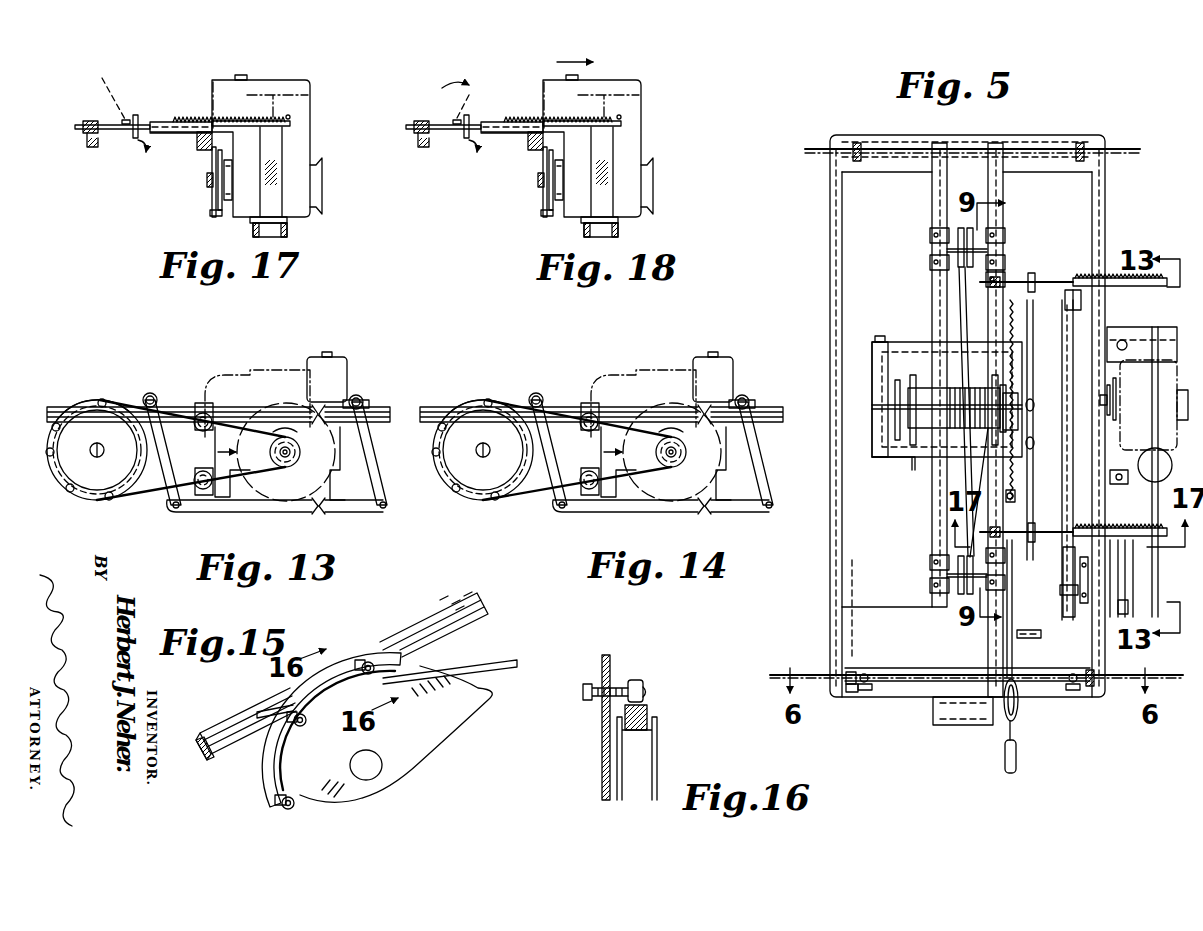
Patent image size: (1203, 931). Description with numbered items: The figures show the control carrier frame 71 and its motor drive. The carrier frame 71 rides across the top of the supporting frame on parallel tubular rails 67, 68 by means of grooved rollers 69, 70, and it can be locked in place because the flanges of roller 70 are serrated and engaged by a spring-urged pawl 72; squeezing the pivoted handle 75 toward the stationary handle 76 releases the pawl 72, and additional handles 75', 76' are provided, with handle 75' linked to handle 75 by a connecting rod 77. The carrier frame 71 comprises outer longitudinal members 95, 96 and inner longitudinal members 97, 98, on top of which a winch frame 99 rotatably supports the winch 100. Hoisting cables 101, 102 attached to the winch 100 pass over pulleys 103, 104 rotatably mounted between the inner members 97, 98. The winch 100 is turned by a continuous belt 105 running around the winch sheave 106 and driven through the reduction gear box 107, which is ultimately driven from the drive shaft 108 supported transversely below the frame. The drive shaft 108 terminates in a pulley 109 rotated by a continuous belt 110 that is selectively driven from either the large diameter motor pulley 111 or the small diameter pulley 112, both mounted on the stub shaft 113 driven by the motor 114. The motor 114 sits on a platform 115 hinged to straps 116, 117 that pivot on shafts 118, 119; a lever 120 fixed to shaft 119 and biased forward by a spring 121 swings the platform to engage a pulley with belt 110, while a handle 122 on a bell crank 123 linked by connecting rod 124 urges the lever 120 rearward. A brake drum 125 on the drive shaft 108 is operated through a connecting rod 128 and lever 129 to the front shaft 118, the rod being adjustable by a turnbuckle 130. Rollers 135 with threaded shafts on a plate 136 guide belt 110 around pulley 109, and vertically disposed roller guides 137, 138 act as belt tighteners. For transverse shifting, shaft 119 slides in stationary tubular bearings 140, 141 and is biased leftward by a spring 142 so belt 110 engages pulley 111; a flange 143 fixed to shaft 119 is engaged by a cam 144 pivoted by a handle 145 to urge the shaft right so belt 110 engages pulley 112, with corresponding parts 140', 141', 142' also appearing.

In FIG. 5, the tubular rail 67 is at (782, 672).
In FIG. 5, the tubular rail 68 is at (1115, 149).
In FIG. 5, the grooved roller 69 is at (857, 143).
In FIG. 5, the grooved roller 70 is at (855, 690).
In FIG. 5, the control carrier frame 71 is at (1110, 188).
In FIG. 5, the pawl 72 is at (854, 672).
In FIG. 5, the pivoted handle 75 is at (883, 653).
In FIG. 5, the additional handle 75' is at (1056, 699).
In FIG. 5, the stationary handle 76 is at (887, 704).
In FIG. 5, the additional handle 76' is at (1080, 704).
In FIG. 5, the connecting rod 77 is at (962, 672).
In FIG. 5, the outer longitudinal member 95 is at (835, 228).
In FIG. 17, the outer longitudinal member 96 is at (190, 121).
In FIG. 18, the outer longitudinal member 96 is at (545, 123).
In FIG. 13, the outer longitudinal member 96 is at (50, 407).
In FIG. 14, the outer longitudinal member 96 is at (433, 407).
In FIG. 15, the outer longitudinal member 96 is at (428, 612).
In FIG. 5, the outer longitudinal member 96 is at (1102, 218).
In FIG. 5, the inner longitudinal member 97 is at (932, 213).
In FIG. 17, the inner longitudinal member 98 is at (87, 145).
In FIG. 18, the inner longitudinal member 98 is at (416, 148).
In FIG. 5, the inner longitudinal member 98 is at (1003, 226).
In FIG. 5, the winch frame 99 is at (903, 342).
In FIG. 5, the winch 100 is at (920, 390).
In FIG. 5, the hoisting cable 101 is at (958, 290).
In FIG. 5, the hoisting cable 102 is at (972, 475).
In FIG. 5, the pulley 103 is at (958, 246).
In FIG. 5, the pulley 104 is at (958, 577).
In FIG. 5, the continuous belt 105 is at (905, 463).
In FIG. 5, the winch sheave 106 is at (878, 352).
In FIG. 5, the reduction gear box 107 is at (900, 545).
In FIG. 13, the drive shaft 108 is at (97, 457).
In FIG. 14, the drive shaft 108 is at (483, 444).
In FIG. 15, the drive shaft 108 is at (378, 775).
In FIG. 5, the drive shaft 108 is at (1063, 583).
In FIG. 13, the pulley 109 is at (70, 470).
In FIG. 14, the pulley 109 is at (444, 452).
In FIG. 15, the pulley 109 is at (420, 747).
In FIG. 16, the pulley 109 is at (655, 728).
In FIG. 5, the pulley 109 is at (1130, 612).
In FIG. 17, the continuous belt 110 is at (232, 193).
In FIG. 18, the continuous belt 110 is at (553, 180).
In FIG. 13, the continuous belt 110 is at (120, 497).
In FIG. 14, the continuous belt 110 is at (535, 428).
In FIG. 15, the continuous belt 110 is at (490, 657).
In FIG. 16, the continuous belt 110 is at (647, 708).
In FIG. 5, the continuous belt 110 is at (1125, 550).
In FIG. 17, the large diameter motor pulley 111 is at (225, 172).
In FIG. 18, the large diameter motor pulley 111 is at (551, 202).
In FIG. 13, the large diameter motor pulley 111 is at (299, 447).
In FIG. 14, the large diameter motor pulley 111 is at (686, 448).
In FIG. 5, the large diameter motor pulley 111 is at (1110, 395).
In FIG. 17, the small diameter motor pulley 112 is at (210, 190).
In FIG. 18, the small diameter motor pulley 112 is at (539, 190).
In FIG. 13, the small diameter motor pulley 112 is at (325, 462).
In FIG. 14, the small diameter motor pulley 112 is at (688, 452).
In FIG. 5, the small diameter motor pulley 112 is at (1105, 400).
In FIG. 13, the stub shaft 113 is at (285, 436).
In FIG. 14, the stub shaft 113 is at (706, 462).
In FIG. 17, the motor 114 is at (293, 135).
In FIG. 18, the motor 114 is at (631, 128).
In FIG. 13, the motor 114 is at (334, 455).
In FIG. 14, the motor 114 is at (694, 494).
In FIG. 5, the motor 114 is at (1125, 432).
In FIG. 17, the motor platform 115 is at (288, 232).
In FIG. 18, the motor platform 115 is at (619, 233).
In FIG. 13, the motor platform 115 is at (300, 512).
In FIG. 14, the motor platform 115 is at (651, 512).
In FIG. 13, the strap 116 is at (375, 448).
In FIG. 14, the strap 116 is at (766, 448).
In FIG. 17, the strap 117 is at (270, 168).
In FIG. 18, the strap 117 is at (601, 168).
In FIG. 13, the strap 117 is at (168, 508).
In FIG. 14, the strap 117 is at (566, 490).
In FIG. 13, the front shaft 118 is at (361, 399).
In FIG. 14, the front shaft 118 is at (748, 402).
In FIG. 5, the front shaft 118 is at (1036, 278).
In FIG. 17, the shaft 119 is at (117, 130).
In FIG. 18, the shaft 119 is at (435, 124).
In FIG. 13, the shaft 119 is at (149, 396).
In FIG. 14, the shaft 119 is at (537, 396).
In FIG. 5, the shaft 119 is at (1060, 540).
In FIG. 5, the lever 120 is at (1015, 493).
In FIG. 5, the spring 121 is at (1005, 367).
In FIG. 5, the handle 122 is at (1018, 758).
In FIG. 5, the bell crank 123 is at (1003, 714).
In FIG. 5, the connecting rod 124 is at (1007, 628).
In FIG. 5, the brake drum 125 is at (1082, 605).
In FIG. 5, the connecting rod 128 is at (1033, 448).
In FIG. 5, the lever 129 is at (1082, 297).
In FIG. 5, the turnbuckle 130 is at (1037, 406).
In FIG. 13, the roller 135 is at (48, 448).
In FIG. 14, the roller 135 is at (490, 398).
In FIG. 15, the roller 135 is at (368, 660).
In FIG. 16, the roller 135 is at (640, 678).
In FIG. 5, the roller 135 is at (1128, 608).
In FIG. 13, the plate 136 is at (78, 403).
In FIG. 14, the plate 136 is at (462, 404).
In FIG. 15, the plate 136 is at (478, 708).
In FIG. 16, the plate 136 is at (602, 742).
In FIG. 17, the roller guide 137 is at (215, 158).
In FIG. 18, the roller guide 137 is at (541, 162).
In FIG. 13, the roller guide 137 is at (198, 414).
In FIG. 14, the roller guide 137 is at (586, 412).
In FIG. 17, the roller guide 138 is at (213, 215).
In FIG. 18, the roller guide 138 is at (537, 212).
In FIG. 13, the roller guide 138 is at (200, 495).
In FIG. 14, the roller guide 138 is at (591, 495).
In FIG. 17, the tubular bearing 140 is at (75, 110).
In FIG. 18, the tubular bearing 140 is at (402, 110).
In FIG. 5, the tubular bearing 140 is at (1027, 505).
In FIG. 5, the knob 140' is at (1016, 261).
In FIG. 17, the tubular bearing 141 is at (181, 153).
In FIG. 18, the tubular bearing 141 is at (506, 152).
In FIG. 13, the tubular bearing 141 is at (162, 369).
In FIG. 14, the tubular bearing 141 is at (561, 378).
In FIG. 13, the rod 141' is at (369, 370).
In FIG. 14, the rod 141' is at (763, 376).
In FIG. 5, the rod 141' is at (1034, 266).
In FIG. 17, the spring 142 is at (227, 95).
In FIG. 18, the spring 142 is at (565, 109).
In FIG. 5, the spring 142 is at (1102, 521).
In FIG. 5, the rack 142' is at (1120, 254).
In FIG. 17, the flange 143 is at (140, 146).
In FIG. 18, the flange 143 is at (467, 134).
In FIG. 17, the cam 144 is at (132, 117).
In FIG. 18, the cam 144 is at (467, 116).
In FIG. 17, the handle 145 is at (101, 79).
In FIG. 18, the handle 145 is at (471, 92).
In FIG. 5, the handle 145 is at (1042, 638).